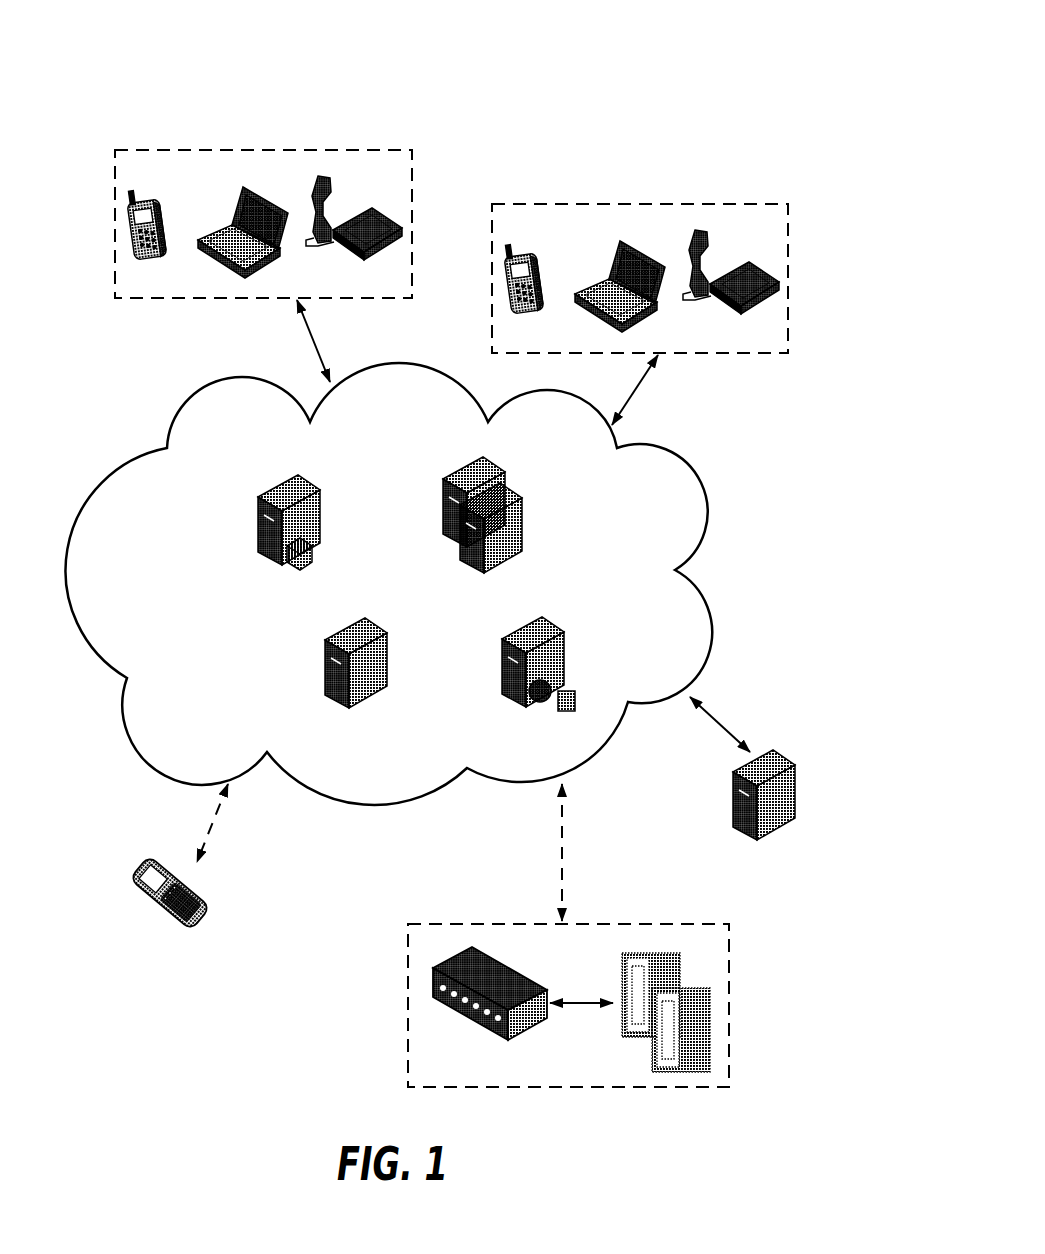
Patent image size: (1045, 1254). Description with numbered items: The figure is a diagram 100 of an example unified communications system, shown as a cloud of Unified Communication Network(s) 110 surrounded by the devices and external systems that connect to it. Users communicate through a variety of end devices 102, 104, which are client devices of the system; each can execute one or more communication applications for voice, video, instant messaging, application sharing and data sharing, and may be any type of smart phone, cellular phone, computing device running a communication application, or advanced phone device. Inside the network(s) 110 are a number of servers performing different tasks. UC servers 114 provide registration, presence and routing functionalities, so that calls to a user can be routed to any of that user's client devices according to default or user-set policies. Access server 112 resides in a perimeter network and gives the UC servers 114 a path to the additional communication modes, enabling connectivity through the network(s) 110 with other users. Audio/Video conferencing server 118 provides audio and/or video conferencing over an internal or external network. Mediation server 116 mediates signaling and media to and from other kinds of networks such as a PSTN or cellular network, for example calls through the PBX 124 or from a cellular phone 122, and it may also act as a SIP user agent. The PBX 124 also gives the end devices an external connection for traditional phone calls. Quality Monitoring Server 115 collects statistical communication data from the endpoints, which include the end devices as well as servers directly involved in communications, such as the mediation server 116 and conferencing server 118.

The diagram 100 is at (662, 55).
The end devices 102 is at (160, 147).
The end devices 104 is at (540, 201).
The Unified Communication (UC) Network(s) 110 is at (192, 386).
The access server 112 is at (284, 466).
The UC servers 114 is at (462, 457).
The Quality Monitoring Server (QMS) 115 is at (733, 768).
The mediation server 116 is at (335, 626).
The Audio/Video (A/V) conferencing server 118 is at (520, 628).
The cellular phone 122 is at (157, 878).
The PBX 124 is at (434, 913).